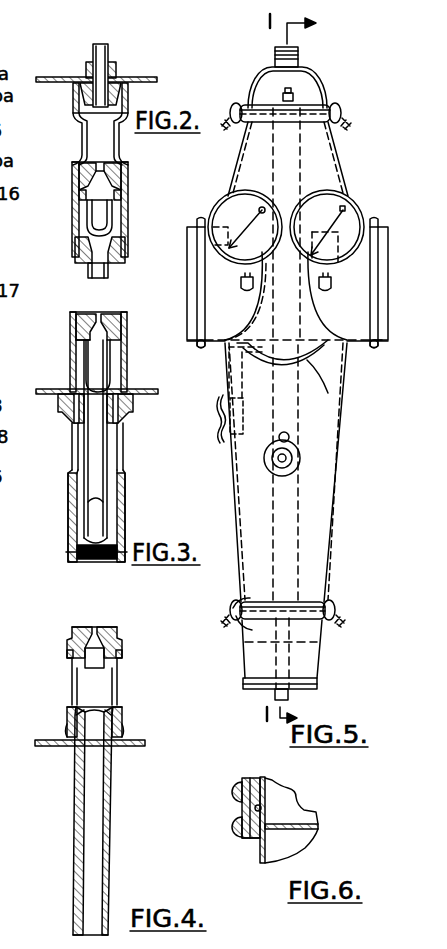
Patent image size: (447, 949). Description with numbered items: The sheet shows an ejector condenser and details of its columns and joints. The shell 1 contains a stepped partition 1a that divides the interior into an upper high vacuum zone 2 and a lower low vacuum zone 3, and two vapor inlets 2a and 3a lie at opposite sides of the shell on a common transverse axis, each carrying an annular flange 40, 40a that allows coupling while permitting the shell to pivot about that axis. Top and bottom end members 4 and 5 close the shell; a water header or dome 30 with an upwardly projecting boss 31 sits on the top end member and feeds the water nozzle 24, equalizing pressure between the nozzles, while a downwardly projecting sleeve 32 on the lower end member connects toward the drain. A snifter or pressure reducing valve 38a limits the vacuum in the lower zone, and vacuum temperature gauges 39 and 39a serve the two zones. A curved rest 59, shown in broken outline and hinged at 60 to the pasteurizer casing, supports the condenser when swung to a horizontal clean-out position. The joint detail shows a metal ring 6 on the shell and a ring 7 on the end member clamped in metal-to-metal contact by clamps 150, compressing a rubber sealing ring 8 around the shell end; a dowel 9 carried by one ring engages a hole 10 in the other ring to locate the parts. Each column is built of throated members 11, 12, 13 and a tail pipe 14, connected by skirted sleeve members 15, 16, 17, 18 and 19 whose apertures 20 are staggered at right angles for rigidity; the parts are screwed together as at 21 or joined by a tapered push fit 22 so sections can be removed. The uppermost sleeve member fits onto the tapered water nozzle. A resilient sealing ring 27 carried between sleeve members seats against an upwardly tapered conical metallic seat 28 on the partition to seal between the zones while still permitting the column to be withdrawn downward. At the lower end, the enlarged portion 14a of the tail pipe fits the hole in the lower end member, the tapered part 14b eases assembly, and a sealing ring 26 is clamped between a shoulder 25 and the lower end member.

In FIG. 5, the shell 1 is at (333, 141).
In FIG. 6, the shell 1 is at (265, 801).
In FIG. 3, the partition 1a is at (140, 392).
In FIG. 5, the partition 1a is at (355, 317).
In FIG. 5, the upper high vacuum zone 2 is at (320, 183).
In FIG. 5, the vapor inlet 2a is at (205, 349).
In FIG. 5, the lower low vacuum zone 3 is at (320, 450).
In FIG. 5, the vapor inlet 3a is at (380, 346).
In FIG. 2, the top cover or end member 4 is at (128, 78).
In FIG. 4, the bottom cover or end member 5 is at (52, 746).
In FIG. 6, the bottom cover or end member 5 is at (292, 829).
In FIG. 5, the metal ring 6 is at (230, 606).
In FIG. 6, the metal ring 6 is at (233, 793).
In FIG. 5, the ring 7 is at (236, 632).
In FIG. 6, the ring 7 is at (233, 824).
In FIG. 6, the sealing ring 8 is at (262, 811).
In FIG. 6, the bolt 9 is at (245, 841).
In FIG. 6, the hole 10 is at (248, 781).
In FIG. 2, the throated member 11 is at (106, 177).
In FIG. 4, the throated member 11 is at (116, 632).
In FIG. 3, the throated member 12 is at (122, 316).
In FIG. 3, the throated member 13 is at (108, 441).
In FIG. 4, the tail pipe 14 is at (75, 828).
In FIG. 4, the enlarged portion of tail pipe 14a is at (78, 752).
In FIG. 4, the tapered part of tail pipe 14b is at (112, 761).
In FIG. 2, the sleeve member 15 is at (74, 104).
In FIG. 2, the sleeve member 16 is at (72, 212).
In FIG. 3, the sleeve member 17 is at (70, 350).
In FIG. 3, the sleeve member 18 is at (68, 508).
In FIG. 4, the sleeve member 19 is at (67, 718).
In FIG. 2, the apertures 20 is at (100, 222).
In FIG. 3, the apertures 20 is at (99, 379).
In FIG. 2, the screwed joint 21 is at (122, 186).
In FIG. 3, the screwed joint 21 is at (124, 416).
In FIG. 4, the screwed joint 21 is at (70, 631).
In FIG. 3, the tapered push fit 22 is at (76, 333).
In FIG. 2, the water nozzle 24 is at (109, 50).
In FIG. 4, the shoulder 25 is at (67, 732).
In FIG. 4, the sealing ring 26 is at (121, 734).
In FIG. 3, the sealing ring 27 is at (76, 425).
In FIG. 3, the conical metallic seat 28 is at (68, 410).
In FIG. 5, the water header or dome 30 is at (318, 76).
In FIG. 5, the boss 31 is at (300, 56).
In FIG. 5, the sleeve 32 is at (322, 657).
In FIG. 5, the snifter or pressure reducing valve 38a is at (292, 460).
In FIG. 5, the vacuum temperature gauge 39 is at (246, 213).
In FIG. 5, the vacuum temperature gauge 39a is at (325, 215).
In FIG. 5, the annular flange or ring 40 is at (202, 348).
In FIG. 5, the annular flange or ring 40a is at (377, 349).
In FIG. 5, the curved rest 59 is at (328, 393).
In FIG. 5, the hinge 60 is at (235, 420).
In FIG. 5, the clamp 150 is at (236, 107).